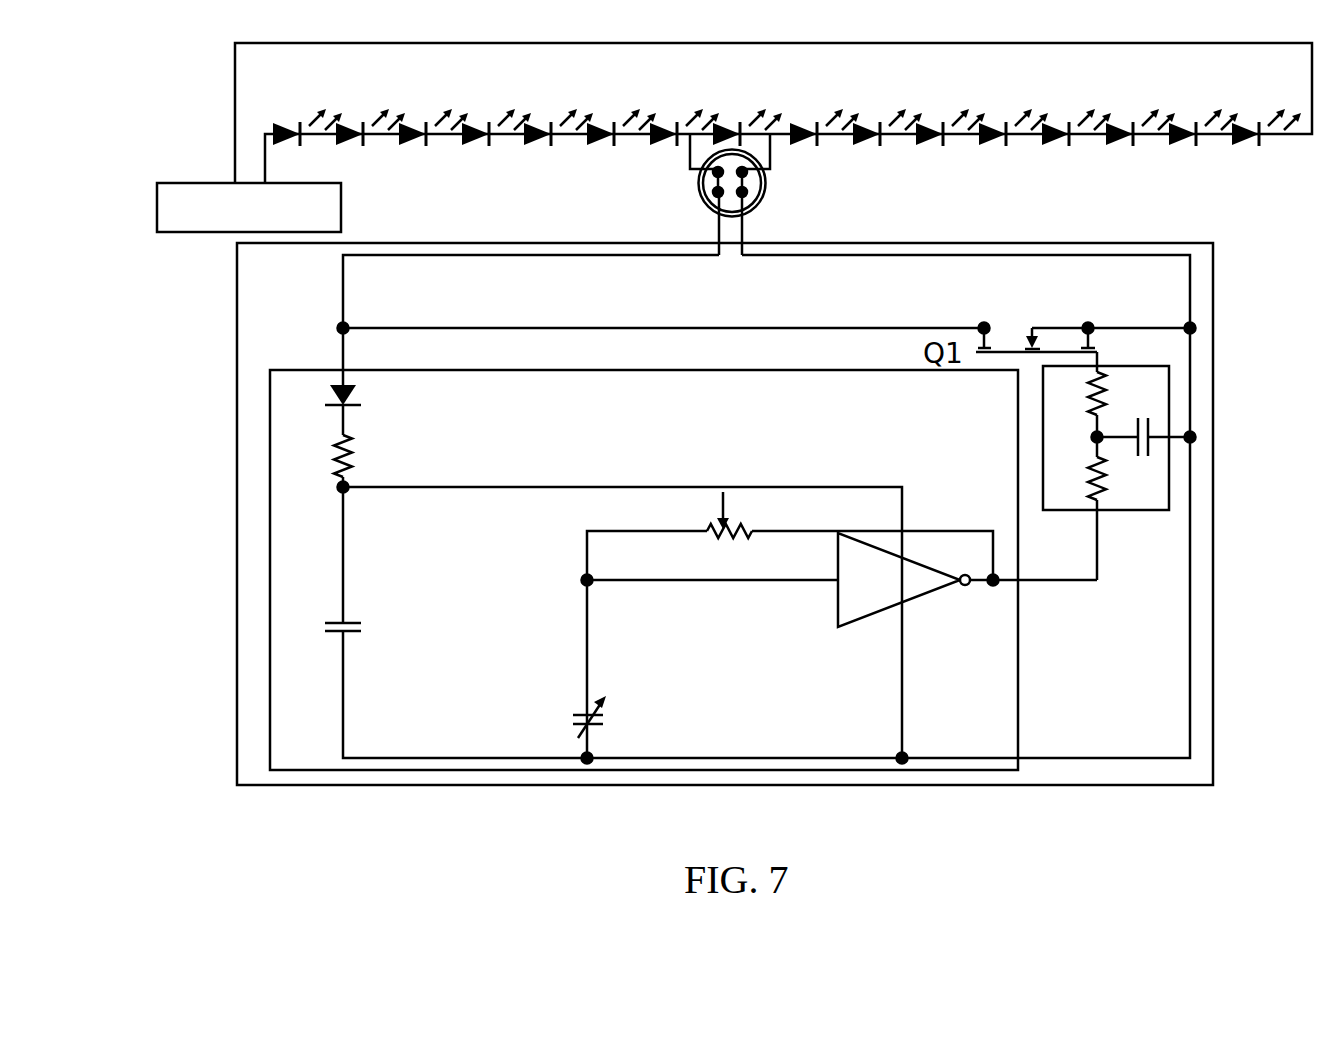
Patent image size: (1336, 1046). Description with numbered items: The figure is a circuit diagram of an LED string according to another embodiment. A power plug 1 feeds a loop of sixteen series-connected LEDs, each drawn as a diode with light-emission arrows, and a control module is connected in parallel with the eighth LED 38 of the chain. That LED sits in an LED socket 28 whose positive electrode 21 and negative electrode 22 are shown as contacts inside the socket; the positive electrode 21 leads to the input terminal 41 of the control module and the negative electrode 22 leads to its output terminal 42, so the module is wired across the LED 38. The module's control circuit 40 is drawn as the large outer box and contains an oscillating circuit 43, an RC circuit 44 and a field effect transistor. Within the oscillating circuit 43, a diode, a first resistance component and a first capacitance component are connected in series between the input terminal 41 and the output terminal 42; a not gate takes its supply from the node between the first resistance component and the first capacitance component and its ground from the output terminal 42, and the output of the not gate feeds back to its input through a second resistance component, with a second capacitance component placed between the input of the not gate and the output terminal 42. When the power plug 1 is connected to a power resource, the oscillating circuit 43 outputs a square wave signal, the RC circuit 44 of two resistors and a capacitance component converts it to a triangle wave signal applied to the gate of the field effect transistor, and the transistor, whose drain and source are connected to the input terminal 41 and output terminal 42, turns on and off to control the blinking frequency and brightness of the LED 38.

The power plug 1 is at (341, 203).
The LED 38 is at (727, 126).
The positive electrode of the LED socket 21 is at (716, 181).
The negative electrode of the LED socket 22 is at (747, 181).
The LED socket 28 is at (760, 189).
The input terminal 41 is at (708, 199).
The output terminal 42 is at (748, 203).
The control circuit 40 is at (1213, 577).
The oscillating circuit 43 is at (1019, 682).
The RC circuit 44 is at (1170, 414).